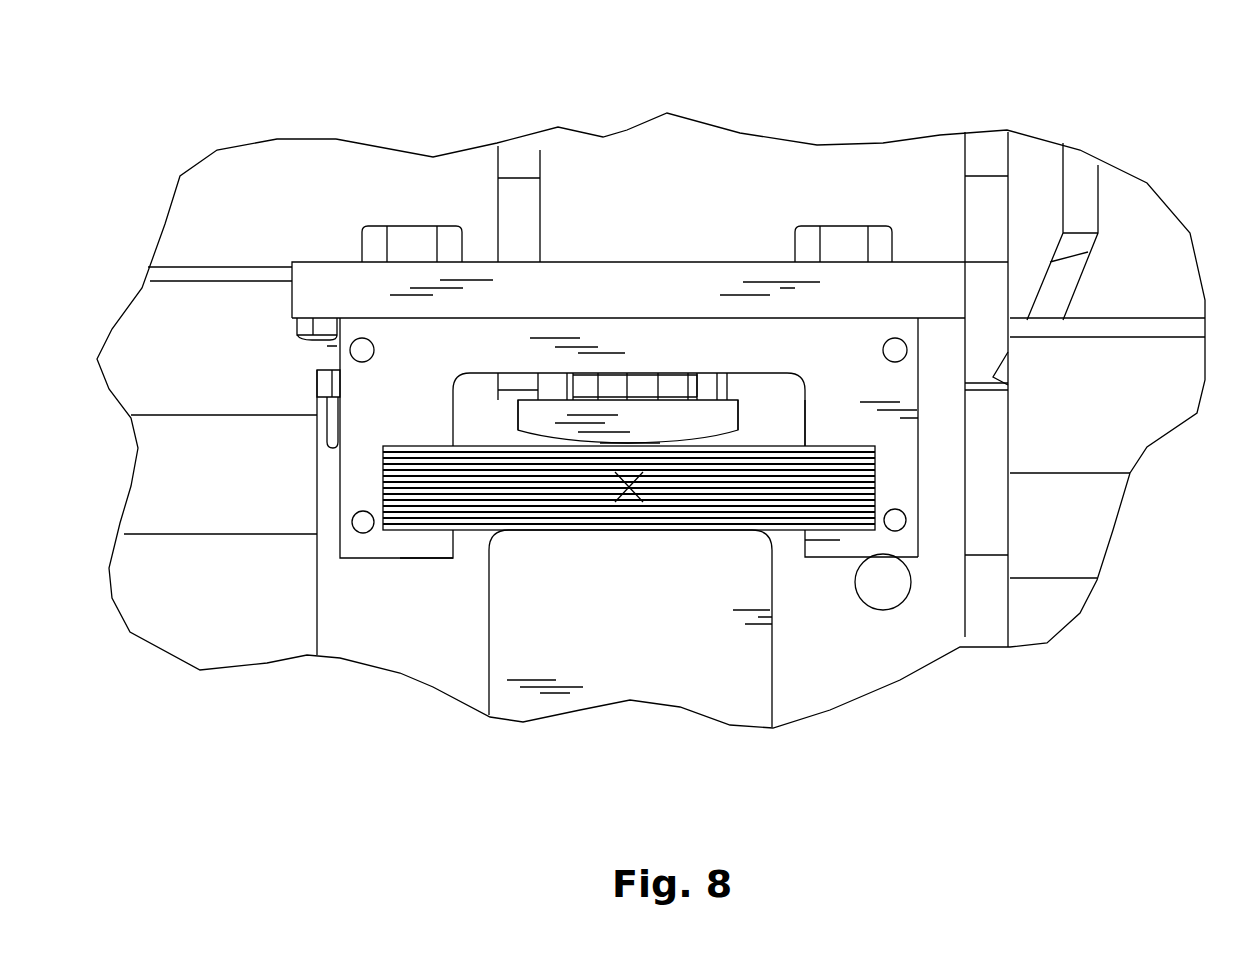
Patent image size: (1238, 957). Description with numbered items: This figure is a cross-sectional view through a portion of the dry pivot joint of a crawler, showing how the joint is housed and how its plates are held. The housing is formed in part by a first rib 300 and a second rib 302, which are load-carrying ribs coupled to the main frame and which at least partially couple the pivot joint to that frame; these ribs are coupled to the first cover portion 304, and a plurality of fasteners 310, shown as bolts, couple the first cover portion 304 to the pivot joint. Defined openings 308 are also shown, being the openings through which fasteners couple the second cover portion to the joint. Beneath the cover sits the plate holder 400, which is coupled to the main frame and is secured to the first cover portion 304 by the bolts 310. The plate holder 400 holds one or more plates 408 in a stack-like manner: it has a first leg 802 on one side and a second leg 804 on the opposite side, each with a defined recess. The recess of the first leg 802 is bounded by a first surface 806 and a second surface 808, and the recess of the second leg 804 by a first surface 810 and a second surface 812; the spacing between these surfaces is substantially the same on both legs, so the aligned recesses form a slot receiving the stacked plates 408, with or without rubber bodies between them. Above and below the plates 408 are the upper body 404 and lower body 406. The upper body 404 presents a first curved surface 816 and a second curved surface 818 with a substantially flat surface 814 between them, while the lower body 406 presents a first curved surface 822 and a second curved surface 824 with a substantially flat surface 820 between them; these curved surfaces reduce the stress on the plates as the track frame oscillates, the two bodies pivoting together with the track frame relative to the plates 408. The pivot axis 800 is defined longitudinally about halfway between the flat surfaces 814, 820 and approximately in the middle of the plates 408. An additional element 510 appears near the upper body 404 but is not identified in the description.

The first rib 300 is at (520, 150).
The second rib 302 is at (990, 147).
The first cover portion 304 is at (628, 277).
The defined openings 308 is at (362, 338).
The fasteners 310 is at (413, 226).
The plate holder 400 is at (835, 347).
The upper body 404 is at (672, 413).
The lower body 406 is at (727, 703).
The plates 408 is at (387, 463).
The stud 510 is at (647, 383).
The pivot axis 800 is at (633, 510).
The first leg 802 is at (378, 570).
The second leg 804 is at (917, 563).
The first surface 806 is at (407, 442).
The second surface 808 is at (435, 543).
The first surface 810 is at (830, 440).
The second surface 812 is at (823, 533).
The substantially flat surface 814 is at (642, 440).
The first curved surface 816 is at (540, 432).
The second curved surface 818 is at (717, 432).
The substantially flat surface 820 is at (613, 532).
The first curved surface 822 is at (515, 542).
The second curved surface 824 is at (743, 540).